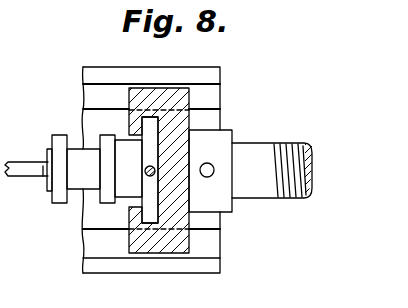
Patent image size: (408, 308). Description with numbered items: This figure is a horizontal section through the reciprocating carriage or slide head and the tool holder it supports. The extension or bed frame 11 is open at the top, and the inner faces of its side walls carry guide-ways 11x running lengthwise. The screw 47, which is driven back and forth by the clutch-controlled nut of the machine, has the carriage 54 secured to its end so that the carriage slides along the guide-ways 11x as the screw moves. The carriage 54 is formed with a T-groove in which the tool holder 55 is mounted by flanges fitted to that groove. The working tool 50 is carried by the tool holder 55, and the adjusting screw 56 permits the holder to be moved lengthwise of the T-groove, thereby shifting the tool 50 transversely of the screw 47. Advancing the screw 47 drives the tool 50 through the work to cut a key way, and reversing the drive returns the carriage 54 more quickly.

The extension or bed frame 11 is at (197, 78).
The guide-ways 11x is at (210, 97).
The carriage 54 is at (147, 100).
The screw 47 is at (262, 152).
The working tool 50 is at (17, 157).
The tool holder 55 is at (84, 184).
The adjusting screw 56 is at (147, 176).